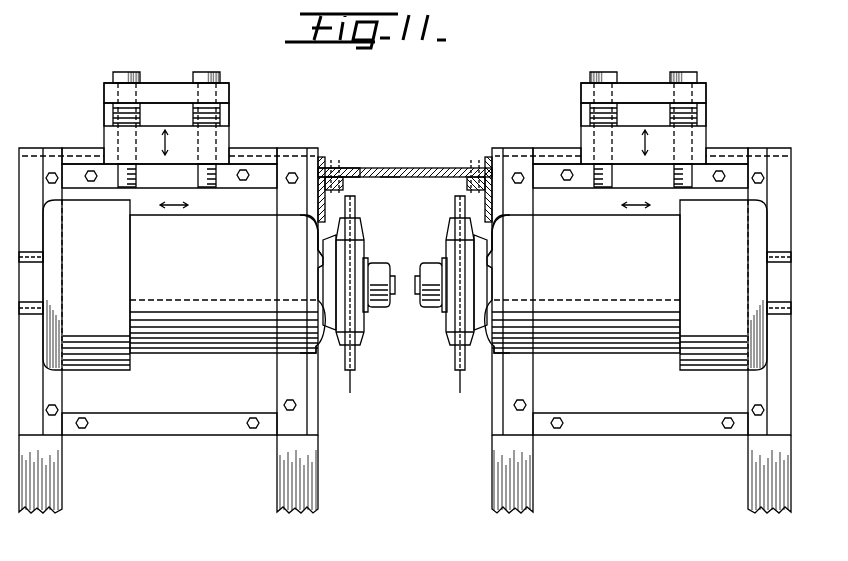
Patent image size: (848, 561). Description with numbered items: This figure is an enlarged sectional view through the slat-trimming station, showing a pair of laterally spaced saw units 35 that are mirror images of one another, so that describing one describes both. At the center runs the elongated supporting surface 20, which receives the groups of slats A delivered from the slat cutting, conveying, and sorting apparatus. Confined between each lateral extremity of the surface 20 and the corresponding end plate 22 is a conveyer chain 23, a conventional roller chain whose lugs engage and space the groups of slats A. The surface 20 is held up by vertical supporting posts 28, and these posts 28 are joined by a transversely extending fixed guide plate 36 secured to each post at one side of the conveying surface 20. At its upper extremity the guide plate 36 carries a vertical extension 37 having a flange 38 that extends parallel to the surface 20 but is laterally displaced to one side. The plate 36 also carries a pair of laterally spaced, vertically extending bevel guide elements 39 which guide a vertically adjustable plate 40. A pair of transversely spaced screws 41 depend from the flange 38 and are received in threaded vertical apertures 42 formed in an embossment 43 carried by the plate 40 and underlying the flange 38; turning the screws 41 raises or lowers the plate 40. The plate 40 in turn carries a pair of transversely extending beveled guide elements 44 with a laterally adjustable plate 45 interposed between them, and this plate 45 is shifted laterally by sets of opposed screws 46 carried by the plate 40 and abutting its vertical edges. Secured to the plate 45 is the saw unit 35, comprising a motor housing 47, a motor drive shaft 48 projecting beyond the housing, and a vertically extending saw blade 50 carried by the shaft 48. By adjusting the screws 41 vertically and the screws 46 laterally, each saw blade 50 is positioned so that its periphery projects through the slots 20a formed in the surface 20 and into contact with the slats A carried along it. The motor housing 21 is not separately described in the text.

The supporting surface 20 is at (406, 180).
The slots 20a is at (350, 170).
The slats A is at (386, 179).
The motor end bell 21 is at (312, 226).
The end plate 22 is at (324, 158).
The conveyer chain 23 is at (341, 168).
The vertical supporting posts 28 is at (62, 492).
The saw unit 35 is at (260, 363).
The fixed guide plate 36 is at (39, 437).
The vertical extension 37 is at (229, 118).
The flange 38 is at (229, 94).
The bevel guide elements 39 is at (62, 437).
The vertically adjustable plate 40 is at (270, 150).
The screws 41 is at (134, 72).
The threaded vertical apertures 42 is at (140, 141).
The embossment 43 is at (105, 138).
The beveled guide elements 44 is at (228, 188).
The laterally adjustable plate 45 is at (150, 422).
The opposed screws 46 is at (36, 282).
The motor housing 47 is at (184, 346).
The motor drive shaft 48 is at (382, 285).
The saw blade 50 is at (352, 373).